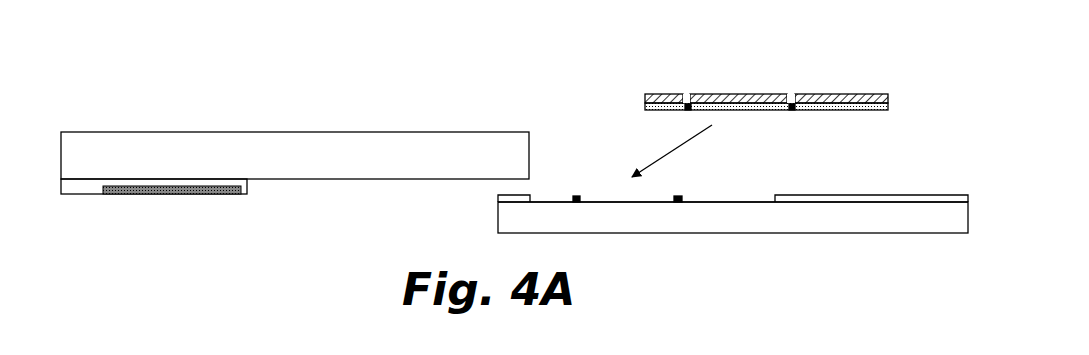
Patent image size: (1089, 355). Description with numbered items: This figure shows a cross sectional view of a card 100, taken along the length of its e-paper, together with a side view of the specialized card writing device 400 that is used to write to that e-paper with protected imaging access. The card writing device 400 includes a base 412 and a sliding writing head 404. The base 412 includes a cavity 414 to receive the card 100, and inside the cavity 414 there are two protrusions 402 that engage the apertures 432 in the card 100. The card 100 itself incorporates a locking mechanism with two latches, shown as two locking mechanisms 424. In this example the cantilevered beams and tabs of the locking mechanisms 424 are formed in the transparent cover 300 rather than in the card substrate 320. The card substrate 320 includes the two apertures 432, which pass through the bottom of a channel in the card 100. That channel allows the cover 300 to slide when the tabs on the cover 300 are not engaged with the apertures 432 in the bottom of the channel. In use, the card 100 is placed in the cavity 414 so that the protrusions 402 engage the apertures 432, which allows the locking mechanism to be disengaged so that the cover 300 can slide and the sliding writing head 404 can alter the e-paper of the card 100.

The card 100 is at (774, 91).
The transparent cover 300 is at (848, 98).
The card substrate 320 is at (883, 108).
The specialized card writing device 400 is at (292, 111).
The protrusions 402 is at (627, 252).
The sliding writing head 404 is at (238, 155).
The base 412 is at (784, 259).
The cavity 414 is at (733, 202).
The locking mechanisms 424 is at (739, 61).
The apertures 432 is at (740, 134).